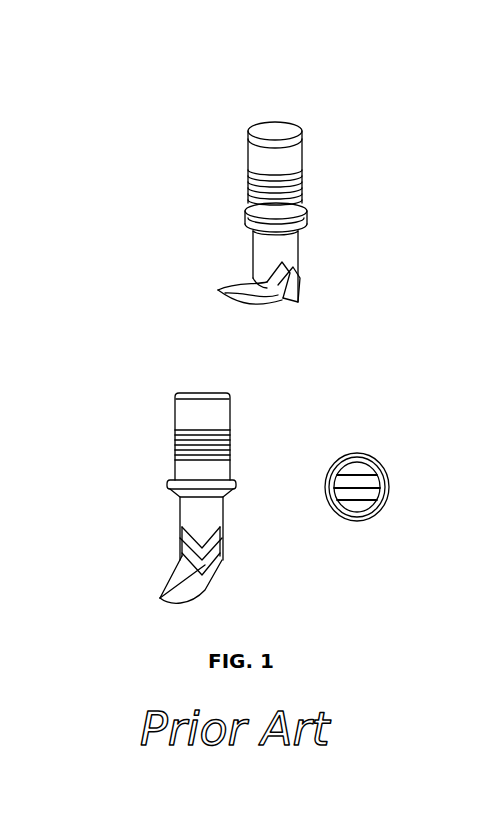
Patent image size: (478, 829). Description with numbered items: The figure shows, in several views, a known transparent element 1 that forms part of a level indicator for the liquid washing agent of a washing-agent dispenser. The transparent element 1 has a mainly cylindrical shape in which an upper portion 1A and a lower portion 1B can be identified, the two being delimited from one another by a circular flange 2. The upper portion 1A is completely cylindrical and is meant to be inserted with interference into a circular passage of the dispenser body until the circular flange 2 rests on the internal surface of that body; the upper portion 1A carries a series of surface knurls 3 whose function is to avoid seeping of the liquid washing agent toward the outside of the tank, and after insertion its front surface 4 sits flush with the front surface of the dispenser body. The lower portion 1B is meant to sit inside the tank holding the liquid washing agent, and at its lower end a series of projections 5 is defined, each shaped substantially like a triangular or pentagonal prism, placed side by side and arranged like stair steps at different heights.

The transparent element 1 is at (348, 183).
The upper portion 1A is at (240, 149).
The lower portion 1B is at (242, 250).
The circular flange 2 is at (303, 217).
The surface knurls 3 is at (248, 182).
The front surface 4 is at (274, 128).
The projections 5 is at (222, 291).